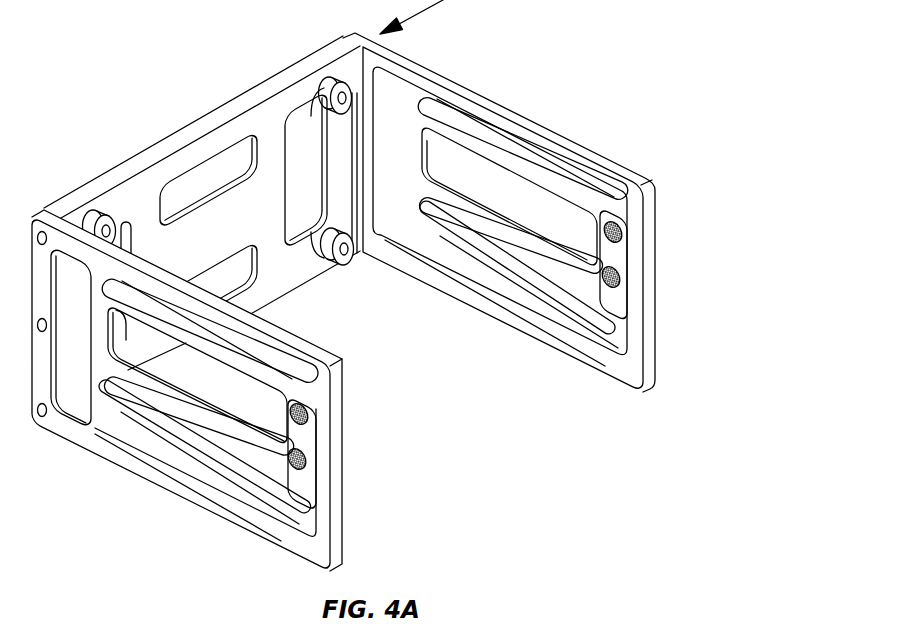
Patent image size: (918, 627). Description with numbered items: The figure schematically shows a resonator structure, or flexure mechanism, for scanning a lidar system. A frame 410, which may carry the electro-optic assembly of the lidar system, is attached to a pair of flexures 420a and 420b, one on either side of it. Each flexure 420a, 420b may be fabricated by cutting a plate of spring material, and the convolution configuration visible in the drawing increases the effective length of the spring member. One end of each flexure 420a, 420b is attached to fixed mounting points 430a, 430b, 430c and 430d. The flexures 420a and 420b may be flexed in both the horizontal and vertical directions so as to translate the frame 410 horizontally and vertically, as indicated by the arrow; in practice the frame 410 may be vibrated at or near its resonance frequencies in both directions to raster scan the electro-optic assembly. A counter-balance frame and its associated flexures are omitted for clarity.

The frame 410 is at (225, 112).
The flexure 420a is at (237, 390).
The flexure 420b is at (559, 212).
The fixed mounting point 430a is at (306, 467).
The fixed mounting point 430b is at (308, 421).
The fixed mounting point 430c is at (621, 283).
The fixed mounting point 430d is at (625, 240).